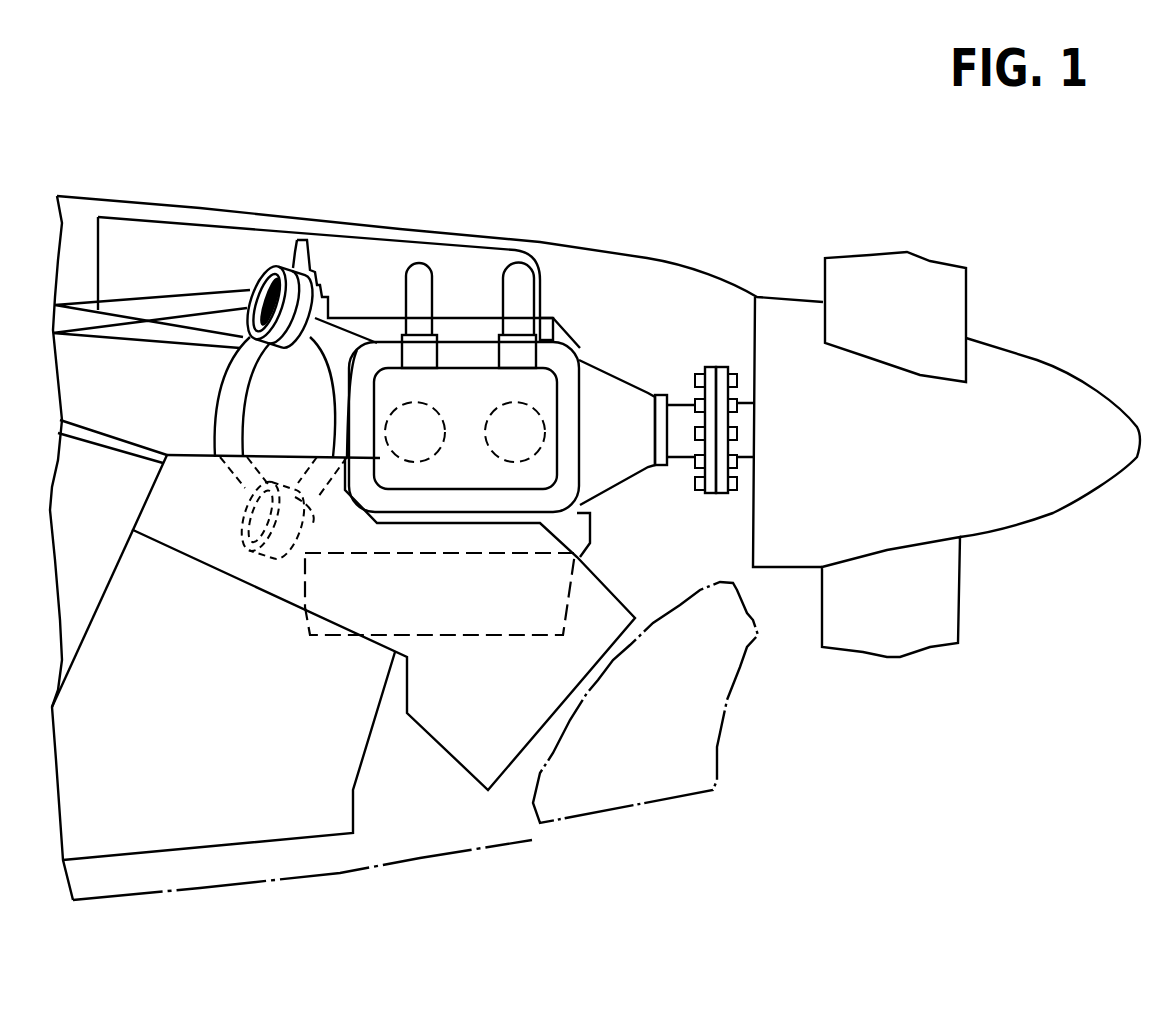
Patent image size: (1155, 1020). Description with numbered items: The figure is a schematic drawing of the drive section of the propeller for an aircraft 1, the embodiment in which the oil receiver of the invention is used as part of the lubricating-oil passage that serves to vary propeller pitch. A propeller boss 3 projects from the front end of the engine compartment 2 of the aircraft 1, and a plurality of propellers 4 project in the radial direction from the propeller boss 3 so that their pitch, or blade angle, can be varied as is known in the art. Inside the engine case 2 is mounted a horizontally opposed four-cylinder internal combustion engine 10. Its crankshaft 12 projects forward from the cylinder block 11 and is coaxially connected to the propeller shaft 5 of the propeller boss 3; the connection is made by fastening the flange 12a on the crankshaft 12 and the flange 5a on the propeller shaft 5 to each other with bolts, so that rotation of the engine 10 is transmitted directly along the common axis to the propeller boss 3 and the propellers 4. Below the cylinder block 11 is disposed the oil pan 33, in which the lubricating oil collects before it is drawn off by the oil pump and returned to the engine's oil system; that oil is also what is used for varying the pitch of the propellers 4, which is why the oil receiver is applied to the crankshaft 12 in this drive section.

The aircraft 1 is at (325, 142).
The engine compartment 2 is at (628, 253).
The propeller boss 3 is at (1040, 358).
The propeller 4 is at (970, 280).
The propeller shaft 5 is at (748, 393).
The flange 5a is at (718, 367).
The internal combustion engine 10 is at (550, 334).
The cylinder block 11 is at (612, 362).
The crankshaft 12 is at (680, 460).
The flange 12a is at (708, 497).
The oil pan 33 is at (455, 637).